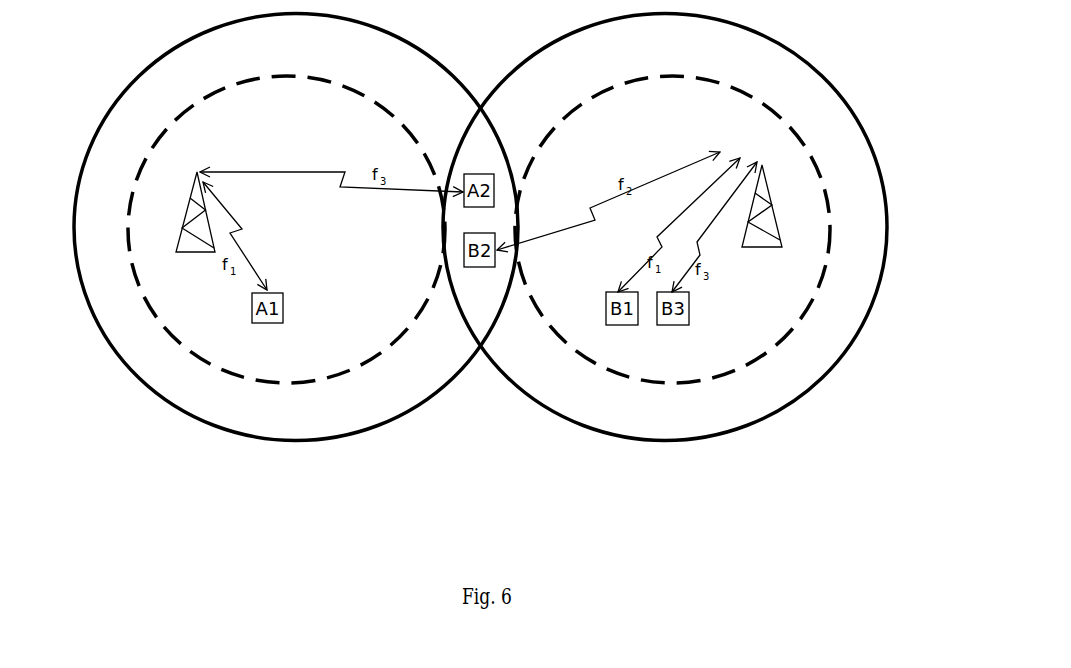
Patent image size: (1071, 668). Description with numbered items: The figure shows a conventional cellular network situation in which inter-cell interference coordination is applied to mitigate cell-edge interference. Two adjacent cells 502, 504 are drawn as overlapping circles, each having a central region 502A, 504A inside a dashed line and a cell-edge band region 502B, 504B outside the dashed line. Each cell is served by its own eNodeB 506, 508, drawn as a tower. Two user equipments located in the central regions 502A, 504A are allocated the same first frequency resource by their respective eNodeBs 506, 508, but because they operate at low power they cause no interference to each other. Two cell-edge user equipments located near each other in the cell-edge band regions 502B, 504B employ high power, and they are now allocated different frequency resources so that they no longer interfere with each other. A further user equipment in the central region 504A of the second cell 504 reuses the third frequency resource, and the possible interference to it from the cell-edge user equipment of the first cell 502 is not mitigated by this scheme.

The cell 502 is at (143, 70).
The central region 502A is at (317, 123).
The cell-edge band region 502B is at (310, 423).
The cell 504 is at (787, 47).
The central region 504A is at (704, 123).
The cell-edge band region 504B is at (693, 426).
The eNodeB 506 is at (183, 225).
The eNodeB 508 is at (779, 232).